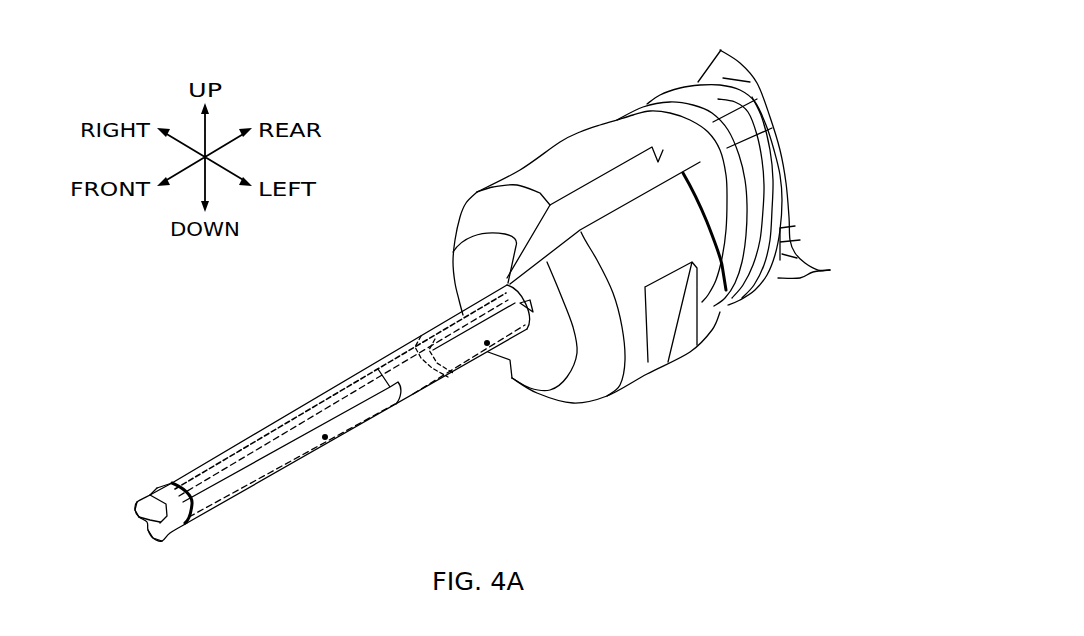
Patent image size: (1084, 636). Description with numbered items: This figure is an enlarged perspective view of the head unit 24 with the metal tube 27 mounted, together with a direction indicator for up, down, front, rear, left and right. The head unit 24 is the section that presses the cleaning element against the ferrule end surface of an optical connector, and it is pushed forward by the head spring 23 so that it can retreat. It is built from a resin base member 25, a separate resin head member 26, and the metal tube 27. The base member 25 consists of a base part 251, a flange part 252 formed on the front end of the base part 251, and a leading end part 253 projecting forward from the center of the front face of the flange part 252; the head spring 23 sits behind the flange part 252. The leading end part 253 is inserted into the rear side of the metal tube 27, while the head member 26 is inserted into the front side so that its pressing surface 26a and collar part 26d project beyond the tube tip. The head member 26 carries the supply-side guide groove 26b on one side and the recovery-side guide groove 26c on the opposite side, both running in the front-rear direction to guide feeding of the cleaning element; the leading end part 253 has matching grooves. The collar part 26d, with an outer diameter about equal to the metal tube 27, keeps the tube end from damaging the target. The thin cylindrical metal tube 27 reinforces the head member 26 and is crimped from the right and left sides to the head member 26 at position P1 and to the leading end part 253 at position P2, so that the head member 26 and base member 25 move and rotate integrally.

The head spring 23 is at (692, 86).
The head unit 24 is at (381, 150).
The base member 25 is at (522, 176).
The base part 251 is at (692, 110).
The flange part 252 is at (568, 157).
The leading end part 253 is at (452, 374).
The head member 26 is at (183, 525).
The pressing surface 26a is at (137, 509).
The supply-side guide groove 26b is at (162, 496).
The recovery-side guide groove 26c is at (152, 530).
The collar part 26d is at (155, 491).
The metal tube 27 is at (396, 351).
The crimping position P1 is at (325, 437).
The crimping position P2 is at (487, 343).